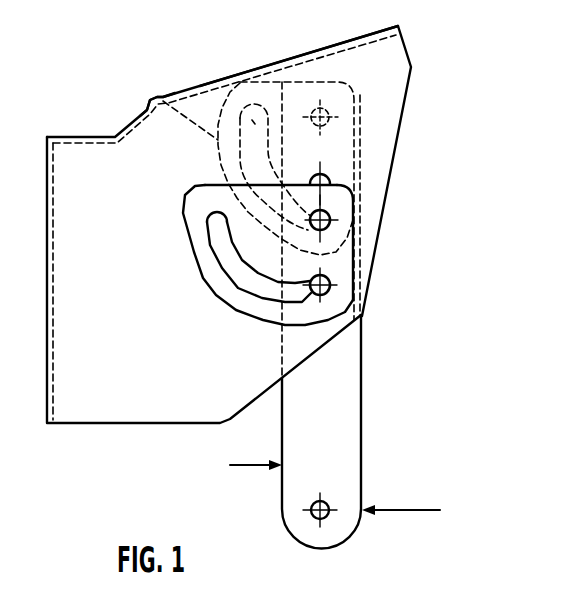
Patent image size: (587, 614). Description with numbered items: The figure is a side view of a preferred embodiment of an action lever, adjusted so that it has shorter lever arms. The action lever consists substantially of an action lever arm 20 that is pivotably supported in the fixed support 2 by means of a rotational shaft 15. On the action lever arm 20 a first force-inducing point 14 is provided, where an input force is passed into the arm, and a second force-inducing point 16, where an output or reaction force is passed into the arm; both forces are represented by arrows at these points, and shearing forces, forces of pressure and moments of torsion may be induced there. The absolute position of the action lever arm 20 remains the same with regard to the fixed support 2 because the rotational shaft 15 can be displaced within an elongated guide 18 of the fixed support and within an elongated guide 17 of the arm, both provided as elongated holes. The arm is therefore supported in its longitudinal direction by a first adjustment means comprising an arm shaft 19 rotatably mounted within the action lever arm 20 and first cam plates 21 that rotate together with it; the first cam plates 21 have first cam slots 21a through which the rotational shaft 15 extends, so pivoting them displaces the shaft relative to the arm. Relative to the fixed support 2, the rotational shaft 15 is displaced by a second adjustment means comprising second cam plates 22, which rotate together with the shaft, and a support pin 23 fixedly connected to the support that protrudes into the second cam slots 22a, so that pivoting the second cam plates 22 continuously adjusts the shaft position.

The fixed support 2 is at (72, 162).
The arm shaft 19 is at (293, 53).
The first cam plates 21 is at (160, 97).
The first cam slots 21a is at (250, 62).
The elongated guide of the arm 17 is at (382, 152).
The elongated guide of the fixed support 18 is at (333, 181).
The rotational shaft 15 is at (337, 231).
The support pin 23 is at (332, 271).
The second cam plates 22 is at (192, 255).
The second cam slots 22a is at (248, 274).
The action lever arm 20 is at (348, 395).
The first force-inducing point 14 is at (363, 503).
The second force-inducing point 16 is at (278, 472).